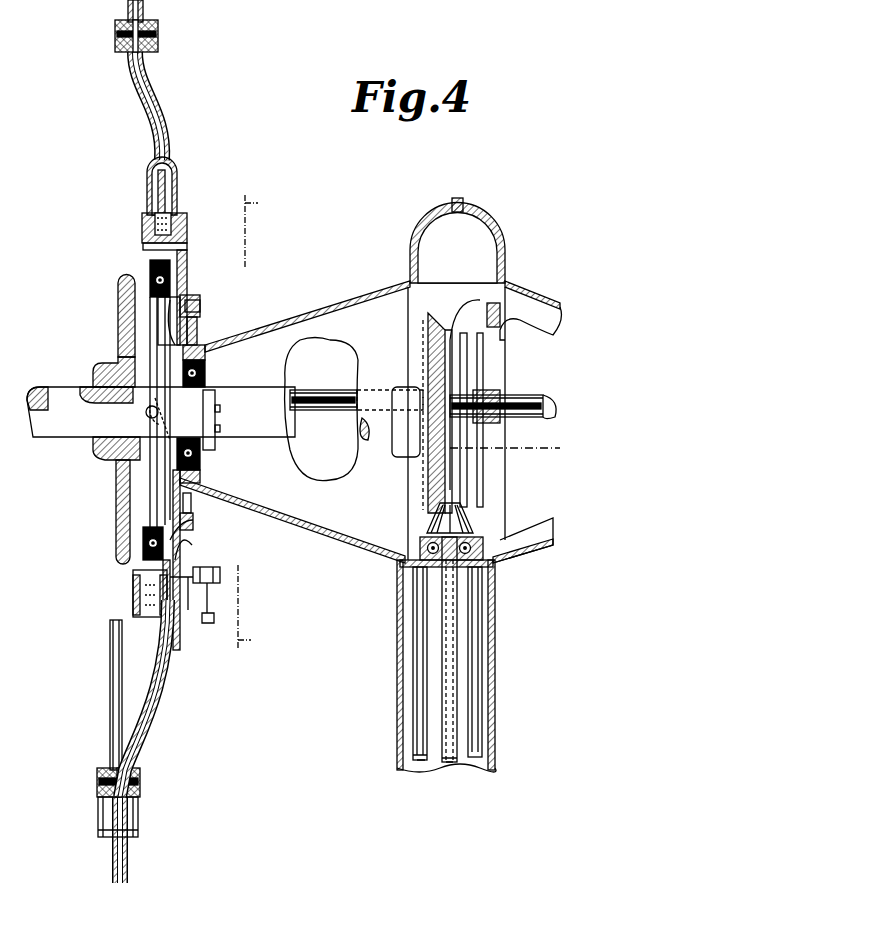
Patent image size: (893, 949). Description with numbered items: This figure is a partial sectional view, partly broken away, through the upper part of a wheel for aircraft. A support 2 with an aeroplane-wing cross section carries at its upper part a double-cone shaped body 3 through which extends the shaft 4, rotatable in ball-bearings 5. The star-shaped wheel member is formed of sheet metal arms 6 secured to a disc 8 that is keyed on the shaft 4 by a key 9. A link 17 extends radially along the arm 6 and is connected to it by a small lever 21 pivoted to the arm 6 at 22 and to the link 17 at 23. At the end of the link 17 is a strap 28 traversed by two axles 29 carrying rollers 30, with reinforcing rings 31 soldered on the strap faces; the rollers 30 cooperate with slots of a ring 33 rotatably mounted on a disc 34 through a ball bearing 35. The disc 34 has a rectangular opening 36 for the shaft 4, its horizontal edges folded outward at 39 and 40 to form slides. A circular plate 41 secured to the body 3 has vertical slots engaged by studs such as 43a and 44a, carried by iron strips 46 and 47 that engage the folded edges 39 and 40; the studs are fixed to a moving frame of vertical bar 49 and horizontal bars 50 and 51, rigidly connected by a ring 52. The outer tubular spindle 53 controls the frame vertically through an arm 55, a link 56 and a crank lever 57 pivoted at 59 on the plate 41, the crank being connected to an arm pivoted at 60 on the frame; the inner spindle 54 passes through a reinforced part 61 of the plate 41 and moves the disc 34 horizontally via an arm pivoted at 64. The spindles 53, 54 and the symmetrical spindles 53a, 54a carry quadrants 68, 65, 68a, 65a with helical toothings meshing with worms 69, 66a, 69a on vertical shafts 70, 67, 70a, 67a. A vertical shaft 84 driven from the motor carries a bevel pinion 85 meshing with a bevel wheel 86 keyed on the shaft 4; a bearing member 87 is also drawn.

The support 2 is at (397, 675).
The double-cone shaped body 3 is at (350, 532).
The shaft 4 is at (46, 398).
The ball-bearings 5 is at (205, 363).
The arms 6 is at (110, 678).
The disc 8 is at (97, 366).
The key 9 is at (92, 390).
The link 17 is at (145, 715).
The small lever 21 is at (147, 60).
The pivot of small lever on arm 22 is at (138, 822).
The pivot of small lever on link 23 is at (158, 40).
The strap 28 is at (147, 186).
The axles 29 is at (175, 224).
The rollers 30 is at (187, 240).
The reinforcing rings 31 is at (142, 219).
The ring 33 is at (165, 180).
The disc 34 is at (150, 322).
The ball bearing 35 is at (150, 278).
The rectangular opening 36 is at (150, 470).
The folded edge 39 is at (180, 338).
The folded edge 40 is at (193, 500).
The circular plate 41 is at (187, 275).
The stud 43a is at (200, 298).
The stud 44a is at (143, 548).
The iron strip 46 is at (197, 325).
The iron strip 47 is at (200, 510).
The vertical bar 49 is at (205, 333).
The horizontal bar 50 is at (200, 305).
The horizontal bar 51 is at (215, 567).
The ring 52 is at (200, 478).
The outer tubular spindle 53 is at (312, 392).
The tubular spindle 53a is at (530, 418).
The inner spindle 54 is at (315, 410).
The inner spindle 54a is at (545, 420).
The arm 55 is at (218, 425).
The link 56 is at (210, 536).
The crank lever 57 is at (210, 603).
The pivot of crank lever 59 is at (185, 602).
The pivot of arm on moving frame 60 is at (200, 538).
The reinforced part 61 is at (165, 430).
The pivot of arm on disc 64 is at (105, 460).
The quadrant 65 is at (450, 330).
The quadrant 65a is at (467, 368).
The worm 66a is at (500, 392).
The vertically extending shaft 67 is at (432, 762).
The vertically extending shaft 67a is at (452, 763).
The quadrant 68 is at (423, 350).
The quadrant 68a is at (483, 380).
The worm 69 is at (420, 440).
The worm 69a is at (487, 423).
The vertically extending shaft 70 is at (415, 716).
The vertically extending shaft 70a is at (482, 725).
The vertical shaft 84 is at (455, 700).
The bevel pinion 85 is at (427, 526).
The bevel wheel 86 is at (428, 498).
The bearing plate 87 is at (495, 572).